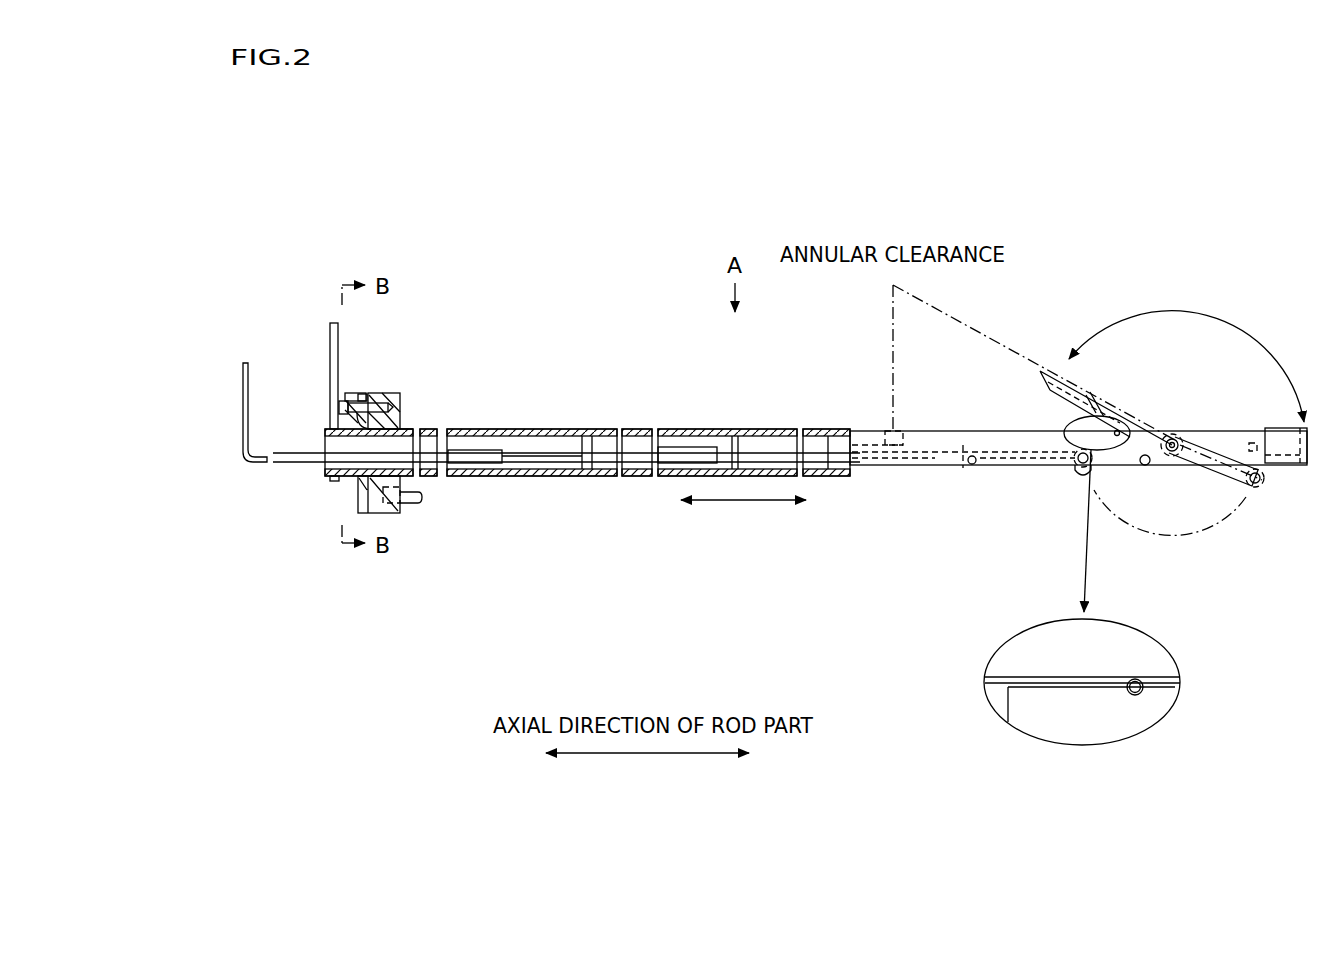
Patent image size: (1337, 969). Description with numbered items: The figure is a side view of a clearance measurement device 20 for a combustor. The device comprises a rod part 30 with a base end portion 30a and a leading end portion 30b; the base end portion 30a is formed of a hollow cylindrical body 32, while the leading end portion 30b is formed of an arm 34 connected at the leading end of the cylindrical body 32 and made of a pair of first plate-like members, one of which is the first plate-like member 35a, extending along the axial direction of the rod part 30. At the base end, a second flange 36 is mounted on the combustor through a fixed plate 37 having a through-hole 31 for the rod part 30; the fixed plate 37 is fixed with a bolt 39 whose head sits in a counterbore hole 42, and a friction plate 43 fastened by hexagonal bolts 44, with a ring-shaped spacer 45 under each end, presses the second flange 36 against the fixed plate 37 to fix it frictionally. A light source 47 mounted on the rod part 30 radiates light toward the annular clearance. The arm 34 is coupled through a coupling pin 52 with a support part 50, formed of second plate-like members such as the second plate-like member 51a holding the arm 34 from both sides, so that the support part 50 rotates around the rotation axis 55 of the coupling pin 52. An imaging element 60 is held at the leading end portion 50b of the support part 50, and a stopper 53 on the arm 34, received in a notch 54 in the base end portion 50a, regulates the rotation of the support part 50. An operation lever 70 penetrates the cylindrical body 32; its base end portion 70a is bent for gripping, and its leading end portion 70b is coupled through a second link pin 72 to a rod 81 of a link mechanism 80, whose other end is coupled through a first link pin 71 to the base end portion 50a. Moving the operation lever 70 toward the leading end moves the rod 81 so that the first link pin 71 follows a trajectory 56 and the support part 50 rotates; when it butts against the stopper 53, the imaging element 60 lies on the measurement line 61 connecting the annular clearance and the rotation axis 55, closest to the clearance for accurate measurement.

The clearance measurement device 20 is at (603, 318).
The rod part 30 is at (688, 407).
The base end portion 30a is at (358, 479).
The leading end portion 30b is at (1046, 430).
The through-hole 31 is at (398, 429).
The cylindrical body 32 is at (527, 428).
The arm 34 is at (928, 428).
The first plate-like member 35a is at (957, 447).
The second flange 36 is at (365, 394).
The fixed plate 37 is at (386, 393).
The bolt 39 is at (410, 502).
The counterbore hole 42 is at (379, 514).
The friction plate 43 is at (356, 392).
The hexagonal bolt 44 is at (338, 406).
The spacer 45 is at (354, 423).
The light source 47 is at (886, 438).
The support part 50 is at (1165, 407).
The base end portion 50a is at (1105, 470).
The leading end portion 50b is at (1264, 469).
The second plate-like member 51a is at (1232, 429).
The coupling pin 52 is at (1165, 463).
The stopper 53 is at (1121, 428).
The notch 54 is at (1148, 692).
The rotation axis 55 is at (1180, 437).
The trajectory 56 is at (1180, 540).
The imaging element 60 is at (1284, 452).
The measurement line 61 is at (976, 326).
The operation lever 70 is at (573, 449).
The base end portion 70a is at (252, 388).
The leading end portion 70b is at (936, 468).
The first link pin 71 is at (1085, 470).
The second link pin 72 is at (965, 463).
The link mechanism 80 is at (1034, 468).
The rod 81 is at (1022, 462).